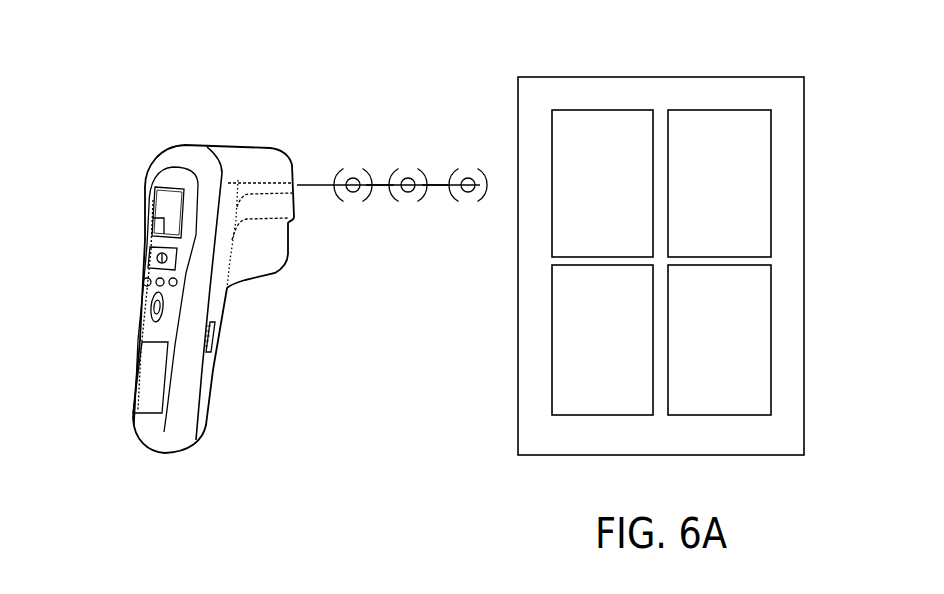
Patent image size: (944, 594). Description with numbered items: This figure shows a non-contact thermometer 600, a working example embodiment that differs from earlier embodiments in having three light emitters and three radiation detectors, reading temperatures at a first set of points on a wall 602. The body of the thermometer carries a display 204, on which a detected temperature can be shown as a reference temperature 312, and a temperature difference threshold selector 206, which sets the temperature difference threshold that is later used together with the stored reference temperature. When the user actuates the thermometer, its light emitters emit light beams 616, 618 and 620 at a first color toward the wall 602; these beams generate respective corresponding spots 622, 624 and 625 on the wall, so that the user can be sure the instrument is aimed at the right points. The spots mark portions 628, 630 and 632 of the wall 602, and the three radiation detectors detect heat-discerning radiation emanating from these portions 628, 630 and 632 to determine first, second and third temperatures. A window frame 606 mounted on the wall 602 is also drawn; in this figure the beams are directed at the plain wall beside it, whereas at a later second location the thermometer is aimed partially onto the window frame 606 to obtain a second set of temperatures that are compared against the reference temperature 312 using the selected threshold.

The non-contact thermometer 600 is at (82, 142).
The wall 602 is at (205, 74).
The display 204 is at (150, 206).
The reference temperature 312 is at (152, 228).
The temperature difference threshold selector 206 is at (143, 350).
The window frame 606 is at (805, 121).
The light beam 616 is at (314, 183).
The light beam 618 is at (380, 190).
The light beam 620 is at (441, 180).
The spot 622 is at (352, 208).
The spot 624 is at (407, 207).
The third measurement spot 625 is at (468, 207).
The portion of wall 628 is at (352, 166).
The portion of wall 630 is at (407, 165).
The portion of wall 632 is at (469, 166).